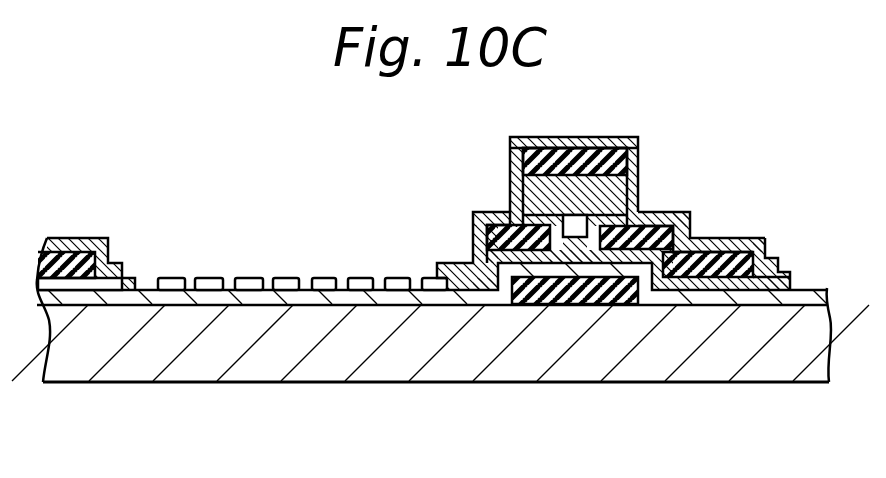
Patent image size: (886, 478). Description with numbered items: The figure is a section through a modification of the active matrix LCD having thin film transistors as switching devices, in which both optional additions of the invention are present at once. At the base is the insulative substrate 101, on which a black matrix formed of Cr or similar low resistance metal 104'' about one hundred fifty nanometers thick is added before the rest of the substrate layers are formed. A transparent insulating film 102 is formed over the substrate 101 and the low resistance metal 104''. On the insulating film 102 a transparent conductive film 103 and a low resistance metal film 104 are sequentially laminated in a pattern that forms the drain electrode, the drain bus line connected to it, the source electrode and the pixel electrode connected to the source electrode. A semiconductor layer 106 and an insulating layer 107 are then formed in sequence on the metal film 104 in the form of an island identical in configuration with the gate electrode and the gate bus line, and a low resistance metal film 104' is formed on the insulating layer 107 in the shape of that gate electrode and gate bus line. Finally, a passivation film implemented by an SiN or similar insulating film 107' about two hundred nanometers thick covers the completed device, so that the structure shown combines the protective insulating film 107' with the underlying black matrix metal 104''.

The insulative substrate 101 is at (718, 320).
The transparent insulating film 102 is at (777, 295).
The transparent conductive film 103 is at (778, 272).
The low resistance metal film 104 is at (675, 237).
The low resistance metal film 104' is at (623, 141).
The low resistance metal 104'' is at (575, 358).
The semiconductor layer 106 is at (632, 218).
The insulating layer 107 is at (586, 213).
The insulating film 107' is at (537, 135).